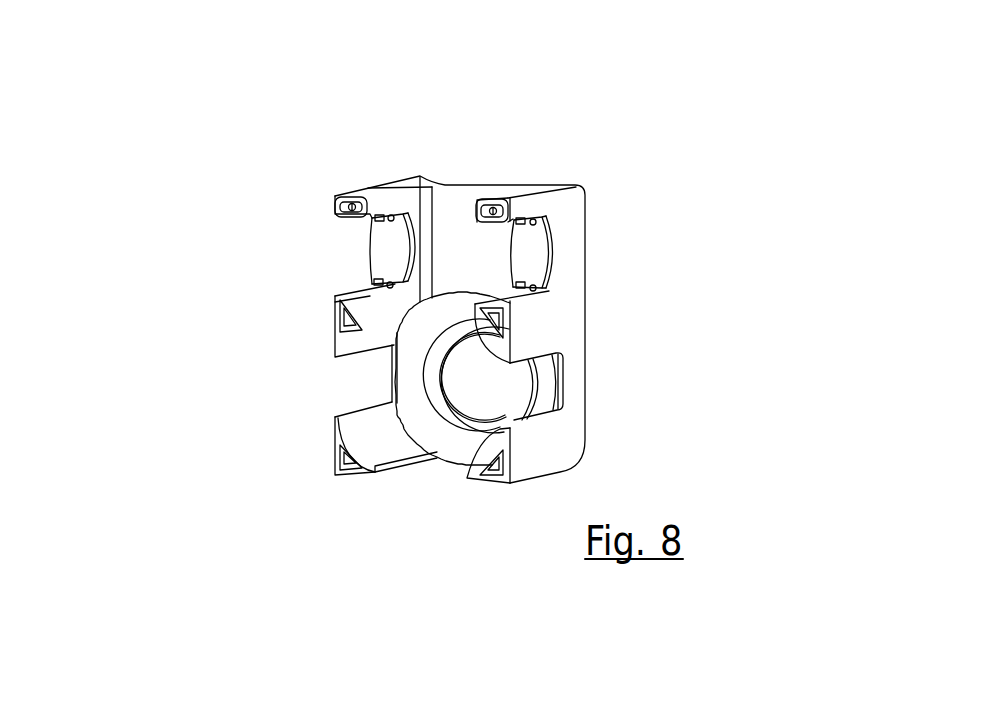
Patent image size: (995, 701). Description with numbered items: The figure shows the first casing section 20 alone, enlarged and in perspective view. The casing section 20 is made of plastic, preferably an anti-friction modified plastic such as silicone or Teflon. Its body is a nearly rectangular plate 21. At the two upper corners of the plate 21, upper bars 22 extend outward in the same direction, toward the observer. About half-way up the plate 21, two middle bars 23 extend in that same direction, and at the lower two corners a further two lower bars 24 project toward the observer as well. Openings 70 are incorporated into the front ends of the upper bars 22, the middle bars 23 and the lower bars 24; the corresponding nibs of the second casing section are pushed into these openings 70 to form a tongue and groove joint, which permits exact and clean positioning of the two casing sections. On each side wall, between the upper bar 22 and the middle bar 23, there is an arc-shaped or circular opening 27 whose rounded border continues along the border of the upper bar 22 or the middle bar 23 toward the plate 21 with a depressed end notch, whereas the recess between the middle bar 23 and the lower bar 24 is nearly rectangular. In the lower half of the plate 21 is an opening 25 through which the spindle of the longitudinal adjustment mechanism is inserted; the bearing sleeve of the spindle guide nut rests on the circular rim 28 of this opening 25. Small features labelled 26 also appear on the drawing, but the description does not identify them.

The casing section 20 is at (583, 208).
The plate 21 is at (452, 222).
The upper bars 22 is at (375, 193).
The middle bars 23 is at (360, 337).
The lower bars 24 is at (373, 442).
The opening 25 is at (494, 385).
The screw holes 26 is at (392, 218).
The arc-shaped or circular opening 27 is at (383, 249).
The circular rim 28 is at (434, 366).
The openings 70 is at (493, 212).